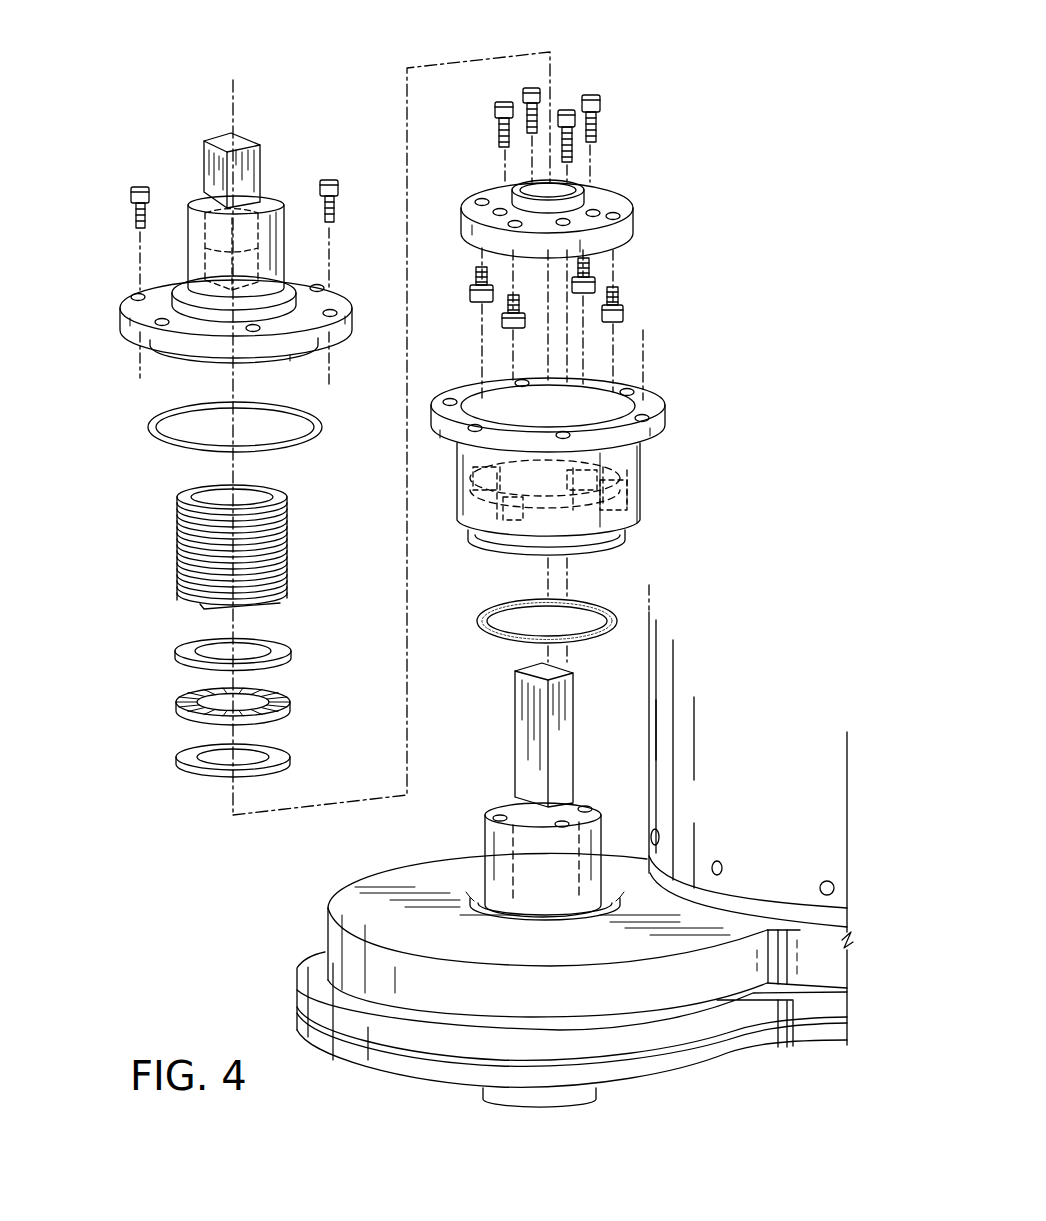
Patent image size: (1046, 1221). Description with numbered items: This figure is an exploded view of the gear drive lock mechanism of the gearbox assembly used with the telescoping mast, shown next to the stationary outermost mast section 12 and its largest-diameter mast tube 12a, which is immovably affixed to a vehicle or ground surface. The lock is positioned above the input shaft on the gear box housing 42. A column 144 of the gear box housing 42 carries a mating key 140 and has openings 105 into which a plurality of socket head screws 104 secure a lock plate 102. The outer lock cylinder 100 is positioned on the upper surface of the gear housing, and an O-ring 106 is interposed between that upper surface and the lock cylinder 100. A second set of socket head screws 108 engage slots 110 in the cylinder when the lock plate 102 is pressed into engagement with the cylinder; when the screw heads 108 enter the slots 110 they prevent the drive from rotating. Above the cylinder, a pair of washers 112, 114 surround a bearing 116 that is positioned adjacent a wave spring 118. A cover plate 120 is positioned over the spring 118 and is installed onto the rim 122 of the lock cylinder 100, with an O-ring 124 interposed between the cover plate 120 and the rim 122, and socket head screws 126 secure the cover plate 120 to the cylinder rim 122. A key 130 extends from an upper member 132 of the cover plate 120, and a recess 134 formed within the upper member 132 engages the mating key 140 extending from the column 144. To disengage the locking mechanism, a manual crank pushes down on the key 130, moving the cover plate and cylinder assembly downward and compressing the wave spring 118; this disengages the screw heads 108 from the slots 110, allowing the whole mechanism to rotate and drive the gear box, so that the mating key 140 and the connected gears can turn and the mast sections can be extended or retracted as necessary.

The outermost mast section 12 is at (649, 682).
The mast tube 12a is at (662, 709).
The gear box housing 42 is at (328, 935).
The outer lock cylinder 100 is at (638, 515).
The lock plate 102 is at (628, 204).
The socket head screws 104 is at (531, 87).
The openings 105 is at (497, 810).
The O-ring 106 is at (495, 638).
The socket head screws 108 is at (503, 322).
The slots 110 is at (447, 467).
The washer 112 is at (182, 763).
The washer 114 is at (190, 650).
The bearing 116 is at (186, 710).
The wave spring 118 is at (285, 547).
The cover plate 120 is at (140, 330).
The rim 122 is at (656, 404).
The O-ring 124 is at (147, 433).
The socket head screws 126 is at (140, 185).
The key 130 is at (258, 158).
The upper member 132 is at (285, 217).
The recess 134 is at (208, 252).
The mating key 140 is at (515, 705).
The column 144 is at (493, 842).